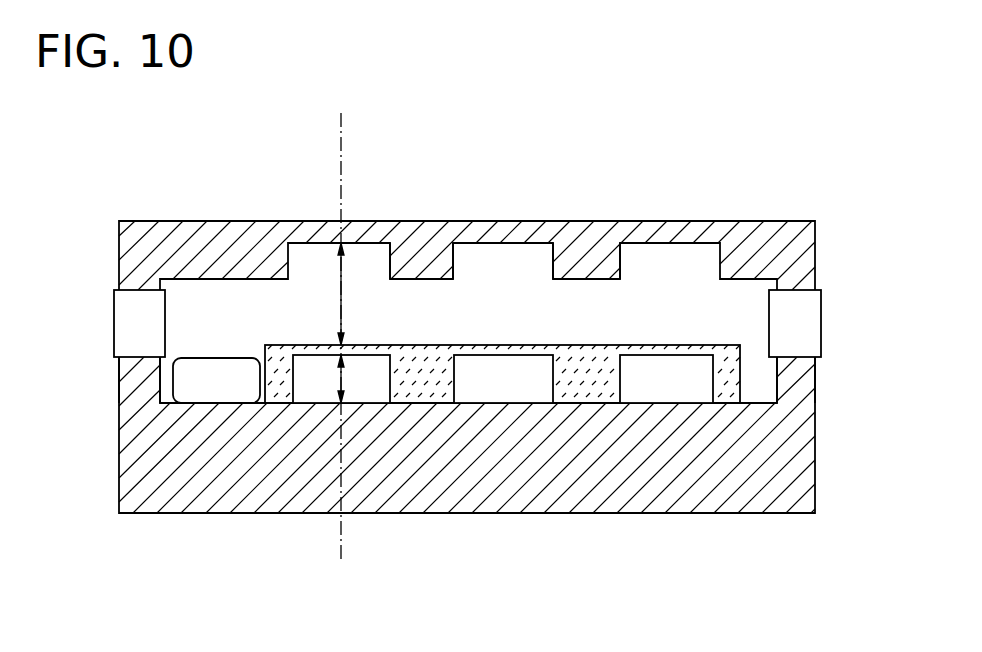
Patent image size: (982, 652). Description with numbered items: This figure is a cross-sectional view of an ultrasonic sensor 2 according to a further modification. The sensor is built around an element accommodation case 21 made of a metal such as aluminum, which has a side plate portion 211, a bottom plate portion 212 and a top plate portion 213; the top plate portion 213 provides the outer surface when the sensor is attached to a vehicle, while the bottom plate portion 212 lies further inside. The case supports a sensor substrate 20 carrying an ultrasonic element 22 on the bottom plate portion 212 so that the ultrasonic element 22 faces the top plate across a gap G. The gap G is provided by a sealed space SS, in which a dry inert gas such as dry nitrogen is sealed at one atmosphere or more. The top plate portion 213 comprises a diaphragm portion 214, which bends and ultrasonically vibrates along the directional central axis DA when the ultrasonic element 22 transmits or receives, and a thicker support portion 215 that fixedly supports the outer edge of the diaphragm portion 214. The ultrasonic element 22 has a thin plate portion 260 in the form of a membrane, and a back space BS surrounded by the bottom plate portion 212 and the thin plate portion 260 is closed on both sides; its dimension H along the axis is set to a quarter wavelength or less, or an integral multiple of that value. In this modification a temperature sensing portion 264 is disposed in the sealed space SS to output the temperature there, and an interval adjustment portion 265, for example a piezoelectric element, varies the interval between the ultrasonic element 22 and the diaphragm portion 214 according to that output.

The ultrasonic sensor 2 is at (463, 328).
The element accommodation case 21 is at (463, 333).
The side plate portion 211 is at (130, 363).
The bottom plate portion 212 is at (130, 458).
The top plate portion 213 is at (130, 250).
The diaphragm portion 214 is at (360, 222).
The support portion 215 is at (192, 220).
The ultrasonic element 22 is at (375, 341).
The sensor substrate 20 is at (742, 347).
The thin plate portion 260 is at (305, 347).
The temperature sensing portion 264 is at (183, 387).
The interval adjustment portion 265 is at (130, 313).
The sealed space SS is at (750, 297).
The back space BS is at (700, 372).
The gap G is at (329, 294).
The dimension H is at (329, 379).
The detection axis DA is at (340, 543).